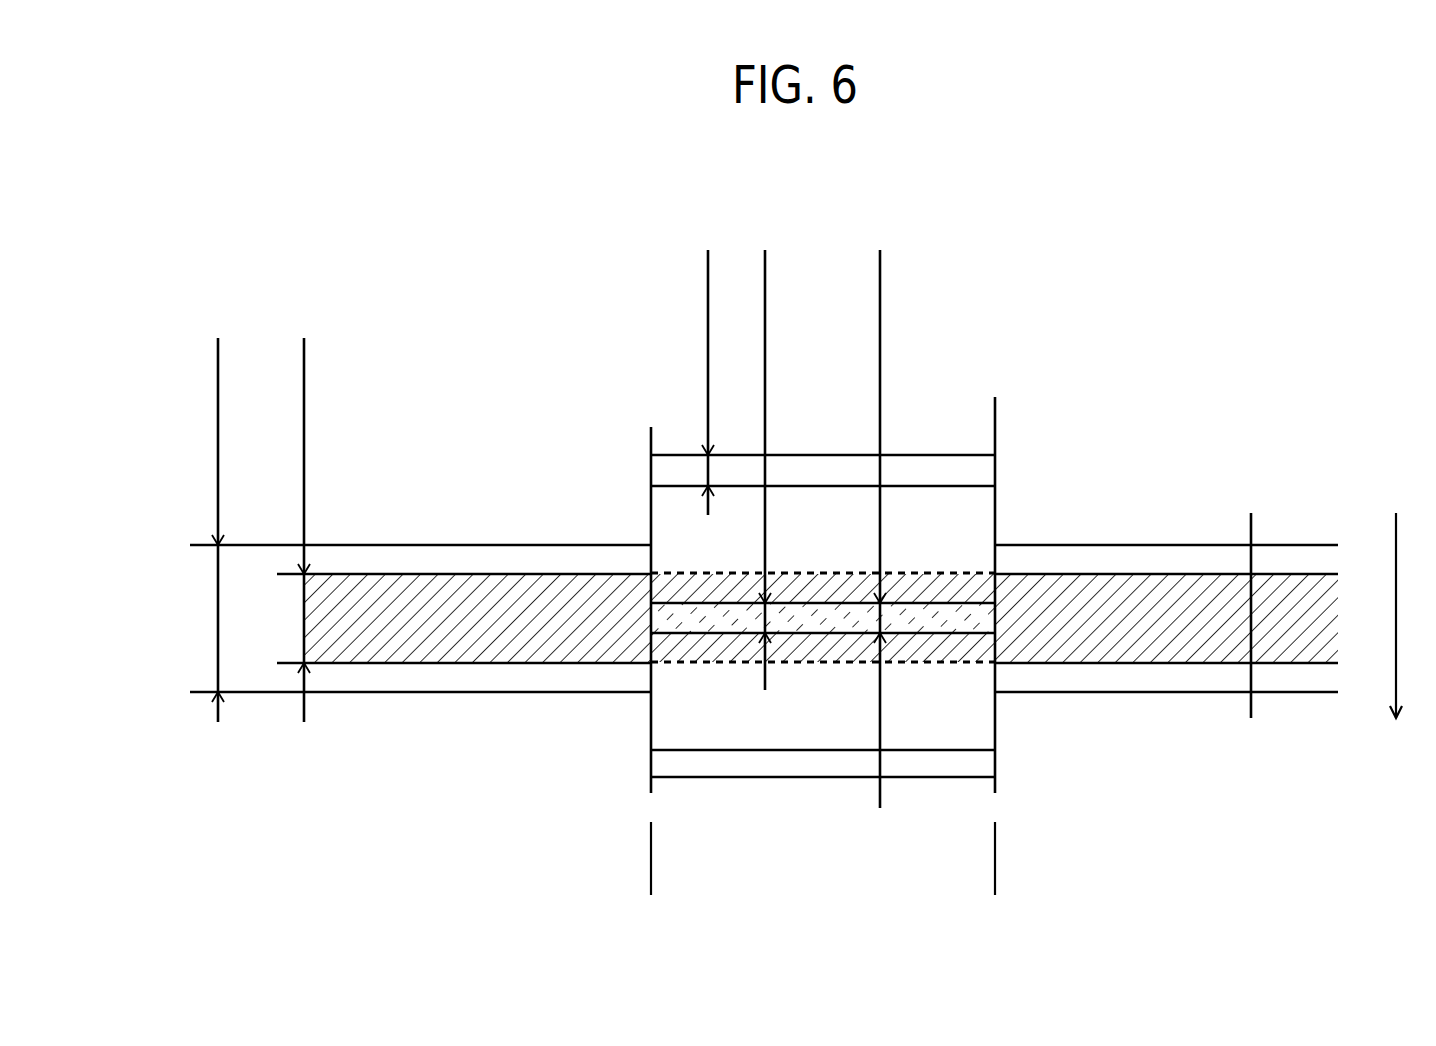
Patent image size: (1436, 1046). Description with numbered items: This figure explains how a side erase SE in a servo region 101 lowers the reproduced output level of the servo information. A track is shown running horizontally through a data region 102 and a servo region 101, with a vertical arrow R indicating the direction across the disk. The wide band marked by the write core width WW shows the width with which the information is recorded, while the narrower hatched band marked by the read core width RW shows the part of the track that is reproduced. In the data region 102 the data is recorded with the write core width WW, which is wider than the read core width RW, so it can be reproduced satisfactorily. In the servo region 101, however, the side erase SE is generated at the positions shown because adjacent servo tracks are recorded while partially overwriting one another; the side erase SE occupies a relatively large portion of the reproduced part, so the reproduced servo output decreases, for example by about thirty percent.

The servo region 101 is at (393, 837).
The data region 102 is at (995, 867).
The write core width WW is at (215, 623).
The read core width RW is at (300, 625).
The side erase SE is at (748, 617).
The radial direction R is at (1396, 638).